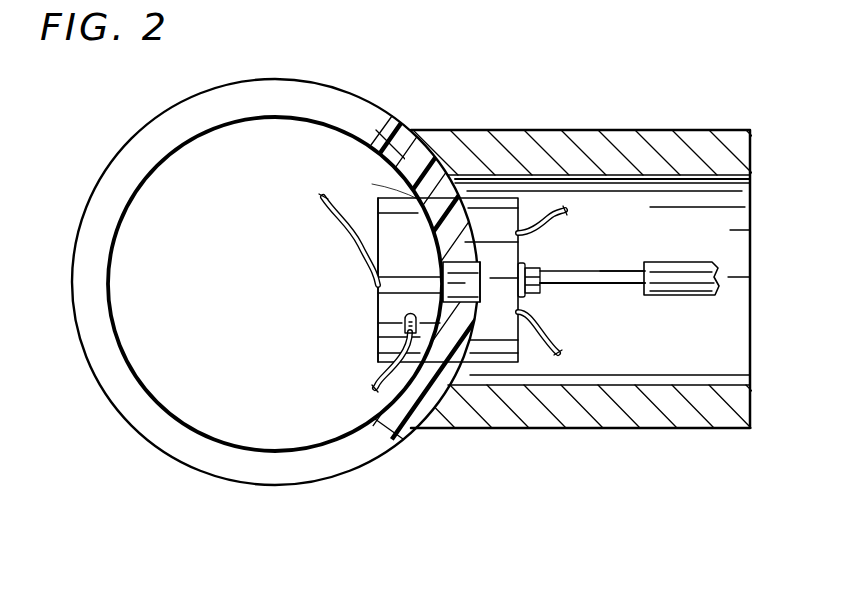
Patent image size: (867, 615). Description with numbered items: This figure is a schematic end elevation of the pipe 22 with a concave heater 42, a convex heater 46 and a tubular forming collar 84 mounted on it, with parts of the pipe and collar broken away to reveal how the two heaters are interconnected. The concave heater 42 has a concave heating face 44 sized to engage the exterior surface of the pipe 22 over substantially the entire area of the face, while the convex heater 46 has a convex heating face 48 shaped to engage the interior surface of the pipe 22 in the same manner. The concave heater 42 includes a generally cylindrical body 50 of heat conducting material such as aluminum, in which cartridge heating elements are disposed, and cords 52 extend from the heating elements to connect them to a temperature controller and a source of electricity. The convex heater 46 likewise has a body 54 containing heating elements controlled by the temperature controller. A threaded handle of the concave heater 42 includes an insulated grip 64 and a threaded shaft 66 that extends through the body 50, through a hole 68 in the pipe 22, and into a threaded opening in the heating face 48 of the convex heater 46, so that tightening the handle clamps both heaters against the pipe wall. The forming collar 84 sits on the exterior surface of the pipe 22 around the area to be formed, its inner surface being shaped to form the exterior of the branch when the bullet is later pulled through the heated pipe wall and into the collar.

The pipe 22 is at (365, 472).
The concave heater 42 is at (582, 246).
The concave heating face 44 is at (470, 242).
The convex heater 46 is at (332, 331).
The convex heating face 48 is at (396, 170).
The body 50 is at (507, 347).
The cords 52 is at (547, 210).
The body 54 is at (387, 222).
The insulated grip 64 is at (705, 293).
The threaded shaft 66 is at (443, 273).
The hole 68 is at (440, 288).
The tubular forming collar 84 is at (653, 430).